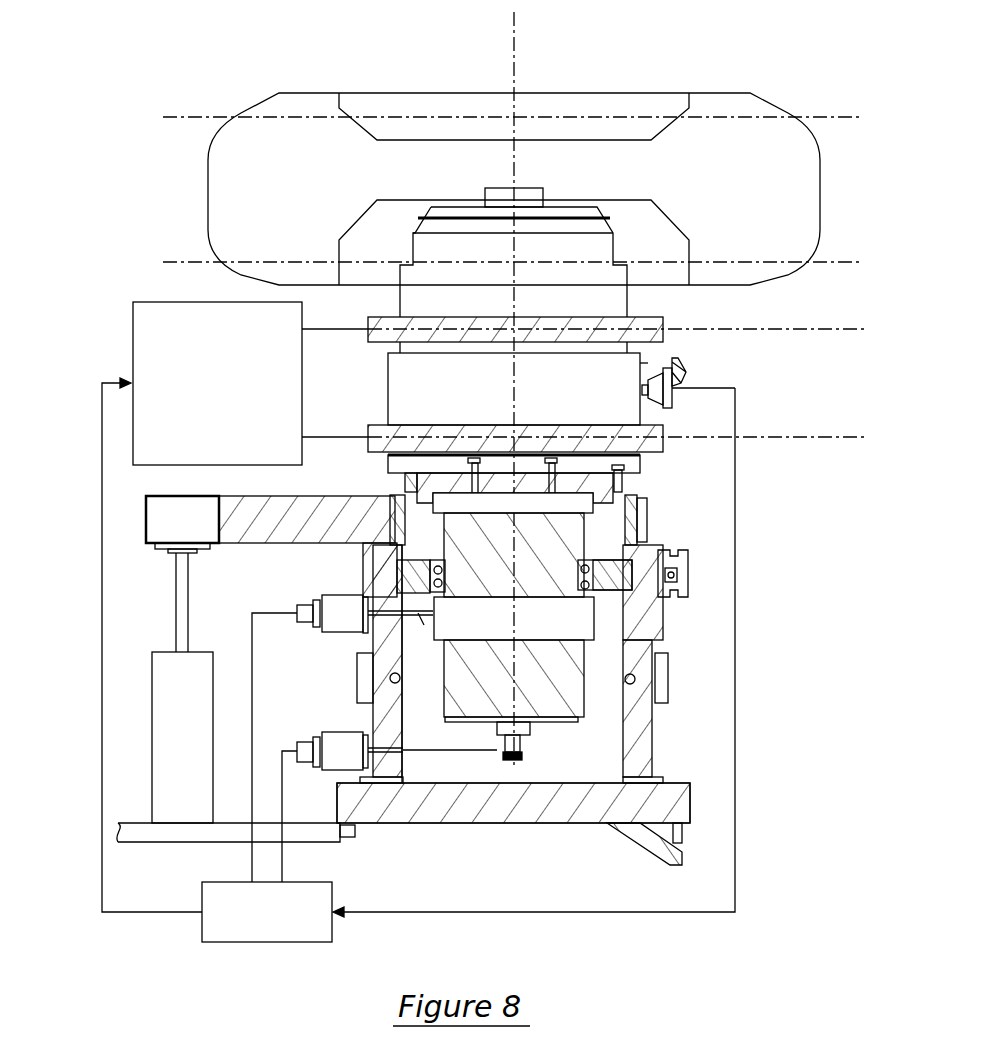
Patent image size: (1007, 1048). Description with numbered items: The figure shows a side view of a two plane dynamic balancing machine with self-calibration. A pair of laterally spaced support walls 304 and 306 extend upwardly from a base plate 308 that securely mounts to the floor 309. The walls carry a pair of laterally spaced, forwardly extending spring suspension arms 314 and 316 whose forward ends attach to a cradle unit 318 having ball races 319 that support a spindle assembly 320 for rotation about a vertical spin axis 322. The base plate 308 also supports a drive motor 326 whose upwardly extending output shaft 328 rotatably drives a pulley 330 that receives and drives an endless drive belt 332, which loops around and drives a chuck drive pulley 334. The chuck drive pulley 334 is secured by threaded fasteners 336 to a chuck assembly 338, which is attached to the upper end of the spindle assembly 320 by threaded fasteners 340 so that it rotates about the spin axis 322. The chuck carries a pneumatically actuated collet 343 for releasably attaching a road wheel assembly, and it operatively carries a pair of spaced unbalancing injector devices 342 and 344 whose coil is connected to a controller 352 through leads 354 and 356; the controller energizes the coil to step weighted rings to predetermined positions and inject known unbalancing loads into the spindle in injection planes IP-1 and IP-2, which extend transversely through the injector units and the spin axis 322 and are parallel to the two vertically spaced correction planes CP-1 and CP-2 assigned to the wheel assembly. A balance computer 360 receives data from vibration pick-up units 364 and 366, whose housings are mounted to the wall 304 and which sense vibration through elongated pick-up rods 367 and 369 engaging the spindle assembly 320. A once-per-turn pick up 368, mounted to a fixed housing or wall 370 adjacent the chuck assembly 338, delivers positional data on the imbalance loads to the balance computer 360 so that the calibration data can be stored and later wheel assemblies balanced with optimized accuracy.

The support wall 304 is at (375, 713).
The support wall 306 is at (640, 742).
The base plate 308 is at (598, 812).
The floor 309 is at (652, 838).
The spring suspension arm 314 is at (672, 550).
The spring suspension arm 316 is at (340, 560).
The cradle unit 318 is at (648, 540).
The ball races 319 is at (587, 585).
The spindle assembly 320 is at (548, 675).
The spin axis 322 is at (516, 28).
The drive motor 326 is at (160, 738).
The output shaft 328 is at (179, 608).
The pulley 330 is at (146, 518).
The drive belt 332 is at (258, 522).
The chuck drive pulley 334 is at (622, 500).
The threaded fasteners 336 is at (640, 476).
The chuck assembly 338 is at (630, 363).
The threaded fasteners 340 is at (473, 458).
The unbalancing injector device 342 is at (358, 308).
The pneumatically actuated collet 343 is at (543, 193).
The unbalancing injector device 344 is at (364, 457).
The controller 352 is at (133, 322).
The lead 354 is at (335, 330).
The lead 356 is at (357, 437).
The balance computer 360 is at (200, 925).
The vibration pick-up unit 364 is at (320, 605).
The vibration pick-up unit 366 is at (332, 762).
The pick-up rod 367 is at (473, 758).
The once-per-turn pick up 368 is at (672, 395).
The pick-up rod 369 is at (418, 613).
The fixed housing or wall 370 is at (672, 372).
The correction plane CP-1 is at (178, 117).
The correction plane CP-2 is at (168, 262).
The injection plane IP-1 is at (805, 328).
The injection plane IP-2 is at (805, 437).